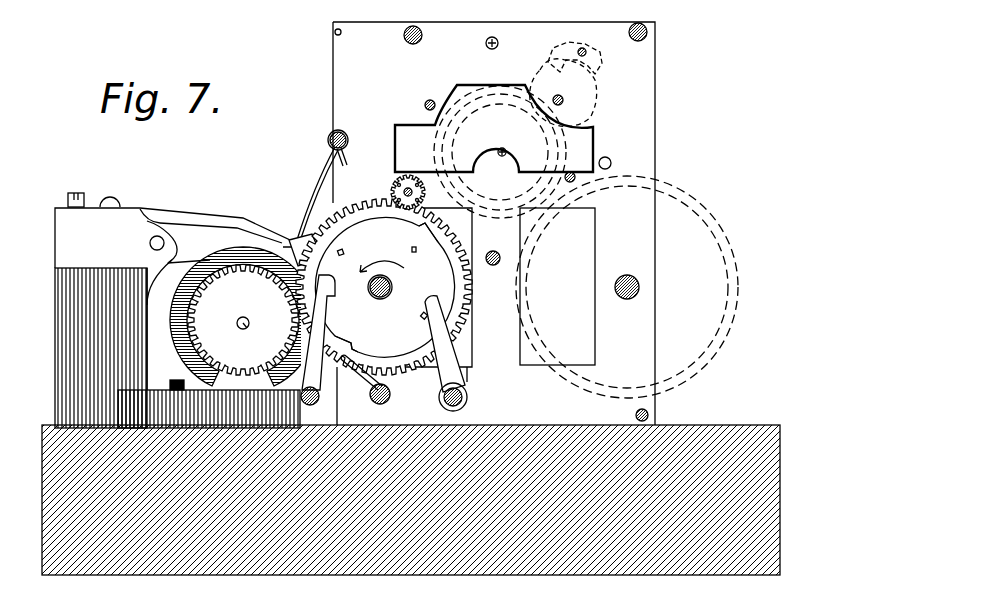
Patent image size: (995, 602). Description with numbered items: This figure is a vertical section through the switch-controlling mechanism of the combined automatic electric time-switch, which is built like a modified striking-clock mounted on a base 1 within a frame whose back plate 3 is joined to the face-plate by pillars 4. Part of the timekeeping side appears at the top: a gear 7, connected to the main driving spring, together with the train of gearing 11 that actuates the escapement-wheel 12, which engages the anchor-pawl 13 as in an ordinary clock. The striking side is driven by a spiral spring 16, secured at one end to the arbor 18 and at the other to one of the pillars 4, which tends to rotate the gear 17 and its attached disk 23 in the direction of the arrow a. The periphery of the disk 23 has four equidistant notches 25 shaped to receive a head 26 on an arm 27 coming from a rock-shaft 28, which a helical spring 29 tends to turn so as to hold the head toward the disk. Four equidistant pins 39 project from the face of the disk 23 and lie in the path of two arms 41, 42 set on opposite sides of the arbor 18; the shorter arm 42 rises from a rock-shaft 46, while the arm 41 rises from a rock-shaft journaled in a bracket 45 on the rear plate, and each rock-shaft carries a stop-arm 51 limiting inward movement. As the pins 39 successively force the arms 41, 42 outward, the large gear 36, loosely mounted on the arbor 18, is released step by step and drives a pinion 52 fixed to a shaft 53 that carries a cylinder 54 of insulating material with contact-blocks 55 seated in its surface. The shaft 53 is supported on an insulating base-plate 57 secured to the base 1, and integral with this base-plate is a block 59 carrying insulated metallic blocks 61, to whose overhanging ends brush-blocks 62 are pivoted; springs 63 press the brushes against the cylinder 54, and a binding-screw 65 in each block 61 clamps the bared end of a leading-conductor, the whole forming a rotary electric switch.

The base 1 is at (42, 494).
The back plate 3 is at (494, 223).
The pillars 4 is at (422, 36).
The gear 7 is at (727, 279).
The train of gearing 11 is at (494, 151).
The escapement-wheel 12 is at (598, 99).
The anchor-pawl 13 is at (585, 52).
The spiral spring 16 is at (359, 380).
The gear 17 is at (462, 278).
The arbor 18 is at (386, 296).
The disk 23 is at (384, 287).
The notches 25 is at (386, 286).
The head 26 is at (291, 238).
The arm 27 is at (318, 163).
The rock-shaft 28 is at (346, 142).
The helical spring 29 is at (356, 159).
The large gear 36 is at (433, 203).
The pins 39 is at (382, 285).
The arm 41 is at (325, 313).
The arm 42 is at (445, 331).
The bracket 45 is at (313, 408).
The rock-shaft 46 is at (448, 407).
The stop-arm 51 is at (496, 252).
The pinion 52 is at (243, 320).
The shaft 53 is at (256, 325).
The cylinder 54 is at (160, 283).
The contact-blocks 55 is at (243, 316).
The base-plate 57 is at (209, 404).
The block 59 is at (86, 348).
The metallic blocks 61 is at (101, 299).
The brush-blocks 62 is at (187, 242).
The springs 63 is at (216, 218).
The binding-screw 65 is at (78, 195).
The arrow a is at (382, 265).